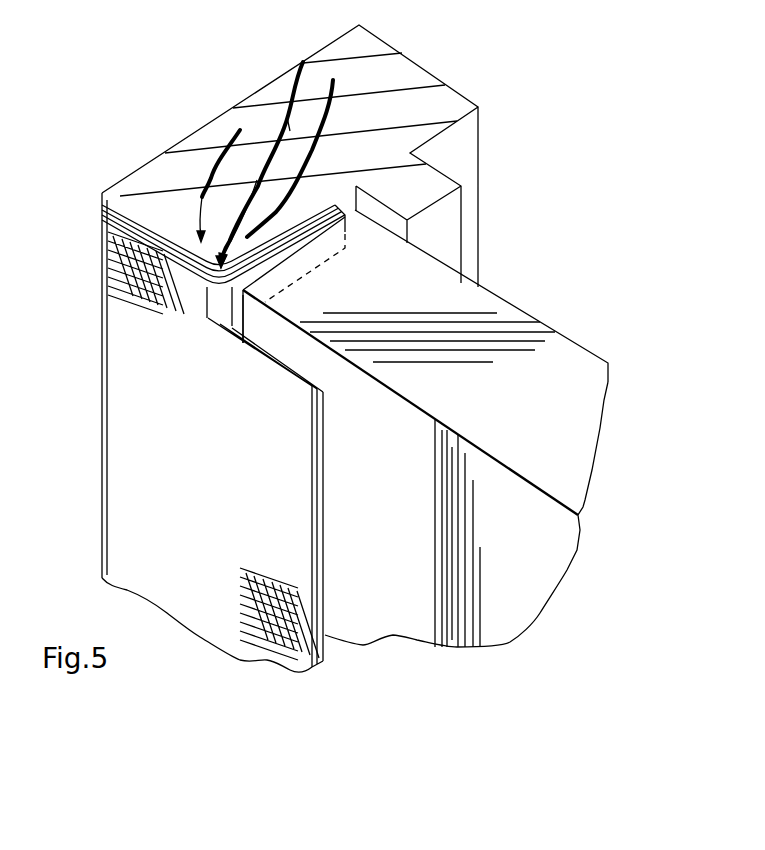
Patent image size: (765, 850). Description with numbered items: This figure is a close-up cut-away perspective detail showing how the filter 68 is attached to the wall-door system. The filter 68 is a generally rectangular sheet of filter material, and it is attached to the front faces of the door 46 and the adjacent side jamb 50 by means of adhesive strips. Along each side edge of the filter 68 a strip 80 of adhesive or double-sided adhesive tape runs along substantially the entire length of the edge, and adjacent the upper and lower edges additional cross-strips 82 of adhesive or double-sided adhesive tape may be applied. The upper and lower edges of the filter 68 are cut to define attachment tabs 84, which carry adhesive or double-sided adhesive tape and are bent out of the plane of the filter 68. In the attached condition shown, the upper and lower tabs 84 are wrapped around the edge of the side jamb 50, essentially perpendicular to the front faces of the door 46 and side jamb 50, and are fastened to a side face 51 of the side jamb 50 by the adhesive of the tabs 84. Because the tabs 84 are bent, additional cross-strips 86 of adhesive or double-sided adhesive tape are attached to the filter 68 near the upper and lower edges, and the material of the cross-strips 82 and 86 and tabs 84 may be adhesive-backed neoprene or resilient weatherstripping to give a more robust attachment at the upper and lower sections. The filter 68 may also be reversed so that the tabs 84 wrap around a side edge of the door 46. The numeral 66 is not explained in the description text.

The door 46 is at (530, 378).
The side jamb 50 is at (410, 74).
The side face 51 is at (385, 203).
The gap 66 is at (237, 327).
The filter 68 is at (243, 372).
The strip 80 is at (323, 490).
The cross-strips 82 is at (115, 199).
The attachment tabs 84 is at (320, 211).
The cross-strips 86 is at (257, 340).